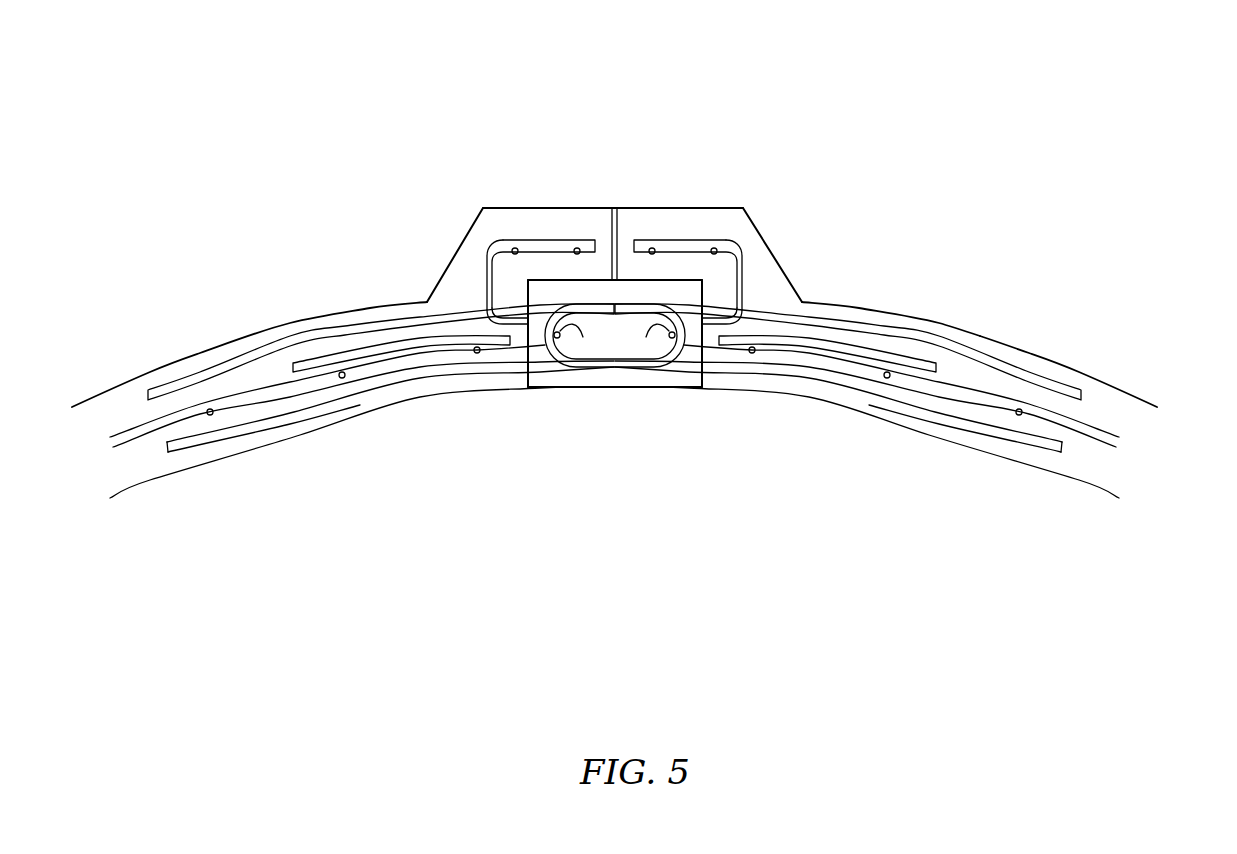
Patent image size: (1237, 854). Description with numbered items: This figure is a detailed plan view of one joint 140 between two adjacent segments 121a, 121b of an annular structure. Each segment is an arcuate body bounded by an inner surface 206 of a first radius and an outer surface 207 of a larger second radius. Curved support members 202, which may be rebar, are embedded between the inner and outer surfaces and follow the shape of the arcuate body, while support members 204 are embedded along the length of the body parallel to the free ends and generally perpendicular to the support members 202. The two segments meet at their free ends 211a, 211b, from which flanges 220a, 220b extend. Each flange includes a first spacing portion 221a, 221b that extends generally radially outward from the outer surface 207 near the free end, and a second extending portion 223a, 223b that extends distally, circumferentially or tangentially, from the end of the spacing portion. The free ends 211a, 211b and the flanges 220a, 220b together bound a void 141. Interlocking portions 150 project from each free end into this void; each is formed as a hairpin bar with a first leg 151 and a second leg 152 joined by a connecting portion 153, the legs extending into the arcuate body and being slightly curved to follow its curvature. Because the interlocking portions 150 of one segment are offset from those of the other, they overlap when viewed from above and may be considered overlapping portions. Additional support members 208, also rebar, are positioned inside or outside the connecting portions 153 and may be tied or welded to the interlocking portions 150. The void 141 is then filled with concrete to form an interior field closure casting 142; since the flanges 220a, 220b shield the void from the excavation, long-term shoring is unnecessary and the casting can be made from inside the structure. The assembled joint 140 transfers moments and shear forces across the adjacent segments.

The joint 140 is at (684, 86).
The inner surface 206 is at (483, 208).
The first spacing portion 221b is at (461, 245).
The first spacing portion 221a is at (767, 245).
The flange 220b is at (582, 223).
The flange 220a is at (638, 223).
The second extending portion 223b is at (505, 240).
The second extending portion 223a is at (724, 240).
The free end 211b is at (480, 320).
The free end 211a is at (749, 320).
The segment 121b is at (193, 357).
The segment 121a is at (1038, 352).
The outer surface 207 is at (982, 338).
The second leg 152 is at (345, 326).
The support member 202 is at (247, 397).
The first leg 151 is at (337, 402).
The support member 204 is at (474, 352).
The interlocking portion 150 is at (547, 352).
The connecting portion 153 is at (640, 337).
The support member 208 is at (560, 339).
The interior field closure casting 142 is at (563, 378).
The void 141 is at (617, 378).